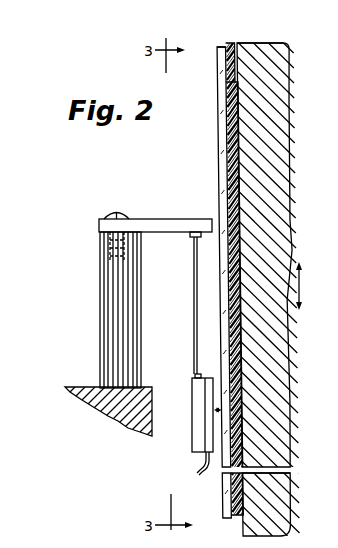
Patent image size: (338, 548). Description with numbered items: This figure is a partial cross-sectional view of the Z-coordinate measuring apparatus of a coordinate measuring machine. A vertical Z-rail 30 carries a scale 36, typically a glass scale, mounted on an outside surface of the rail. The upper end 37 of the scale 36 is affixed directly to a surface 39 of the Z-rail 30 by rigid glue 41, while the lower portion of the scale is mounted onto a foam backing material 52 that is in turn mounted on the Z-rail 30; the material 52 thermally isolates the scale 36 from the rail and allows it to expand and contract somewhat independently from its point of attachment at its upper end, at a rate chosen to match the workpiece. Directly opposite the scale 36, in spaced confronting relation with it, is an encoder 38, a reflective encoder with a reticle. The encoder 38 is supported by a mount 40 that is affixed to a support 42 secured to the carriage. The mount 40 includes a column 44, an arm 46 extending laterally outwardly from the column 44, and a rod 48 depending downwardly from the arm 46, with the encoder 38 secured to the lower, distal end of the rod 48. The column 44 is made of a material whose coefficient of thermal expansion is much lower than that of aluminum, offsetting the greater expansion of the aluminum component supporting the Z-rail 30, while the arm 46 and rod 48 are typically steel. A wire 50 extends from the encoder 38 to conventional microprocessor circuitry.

The Z-rail 30 is at (290, 224).
The scale 36 is at (218, 150).
The upper end of scale 37 is at (226, 62).
The encoder 38 is at (192, 390).
The surface of Z-rail 39 is at (244, 44).
The mount 40 is at (76, 330).
The rigid glue 41 is at (232, 43).
The support 42 is at (100, 413).
The column 44 is at (100, 283).
The arm 46 is at (183, 219).
The rod 48 is at (194, 301).
The wire 50 is at (198, 468).
The foam backing material 52 is at (250, 136).